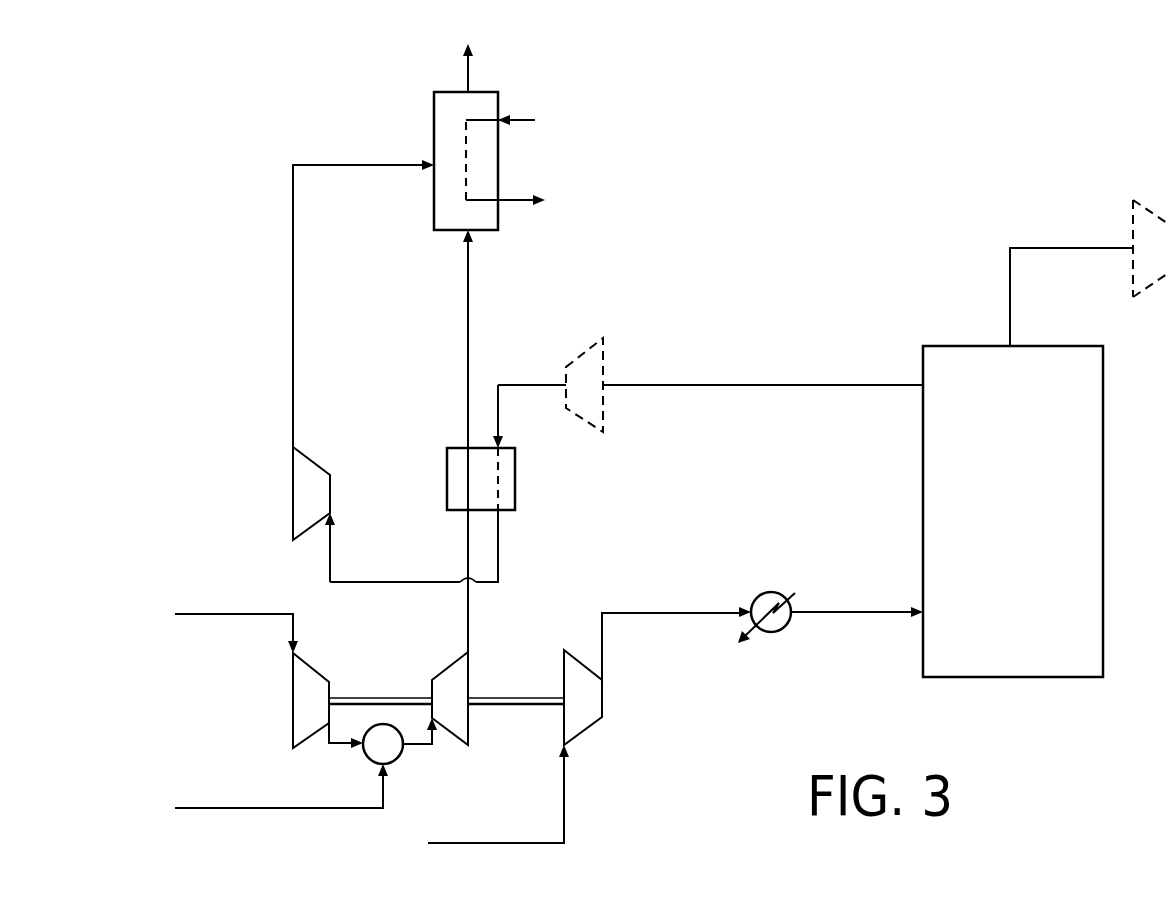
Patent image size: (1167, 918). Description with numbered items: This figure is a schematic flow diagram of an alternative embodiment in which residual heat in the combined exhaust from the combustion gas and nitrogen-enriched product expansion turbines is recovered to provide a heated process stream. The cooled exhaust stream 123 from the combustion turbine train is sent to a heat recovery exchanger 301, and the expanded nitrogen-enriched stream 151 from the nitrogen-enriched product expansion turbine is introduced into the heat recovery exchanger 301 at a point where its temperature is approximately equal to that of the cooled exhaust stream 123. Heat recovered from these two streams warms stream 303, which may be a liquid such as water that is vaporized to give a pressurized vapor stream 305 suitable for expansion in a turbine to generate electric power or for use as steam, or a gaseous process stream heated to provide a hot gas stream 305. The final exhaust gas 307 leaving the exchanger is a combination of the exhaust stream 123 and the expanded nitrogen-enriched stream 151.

The heat recovery exchanger 301 is at (434, 140).
The liquid stream 303 is at (527, 120).
The pressurized vapor stream 305 is at (527, 198).
The final exhaust gas 307 is at (468, 75).
The expanded nitrogen-enriched stream 151 is at (293, 207).
The cooled exhaust stream 123 is at (466, 272).